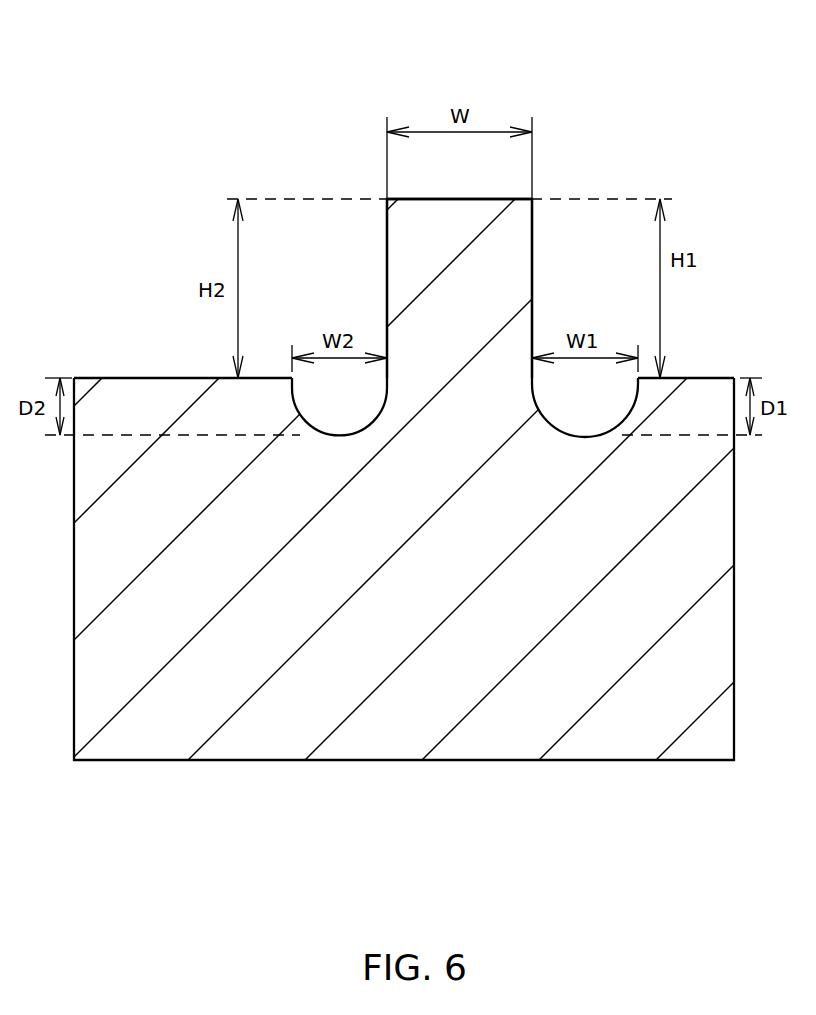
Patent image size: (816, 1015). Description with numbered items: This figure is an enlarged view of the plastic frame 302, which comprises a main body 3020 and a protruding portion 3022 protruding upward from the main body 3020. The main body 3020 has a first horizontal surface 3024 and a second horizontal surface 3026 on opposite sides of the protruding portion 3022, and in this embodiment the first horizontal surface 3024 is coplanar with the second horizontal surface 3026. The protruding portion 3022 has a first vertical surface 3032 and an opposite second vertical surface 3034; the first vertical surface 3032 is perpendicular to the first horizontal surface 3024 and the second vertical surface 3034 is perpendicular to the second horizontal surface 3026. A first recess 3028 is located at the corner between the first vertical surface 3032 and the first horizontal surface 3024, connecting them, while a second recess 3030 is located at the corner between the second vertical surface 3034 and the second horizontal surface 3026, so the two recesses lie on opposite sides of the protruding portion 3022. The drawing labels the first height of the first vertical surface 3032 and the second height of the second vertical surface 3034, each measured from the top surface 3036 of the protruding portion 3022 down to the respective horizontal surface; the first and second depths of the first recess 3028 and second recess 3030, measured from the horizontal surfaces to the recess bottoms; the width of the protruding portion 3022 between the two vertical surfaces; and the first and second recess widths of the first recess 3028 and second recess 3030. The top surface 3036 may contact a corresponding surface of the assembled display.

The plastic frame 302 is at (653, 98).
The main body 3020 is at (413, 610).
The protruding portion 3022 is at (413, 225).
The first horizontal surface 3024 is at (704, 378).
The second horizontal surface 3026 is at (122, 378).
The first recess 3028 is at (584, 437).
The second recess 3030 is at (339, 435).
The first vertical surface 3032 is at (532, 248).
The second vertical surface 3034 is at (387, 252).
The top surface 3036 is at (428, 199).